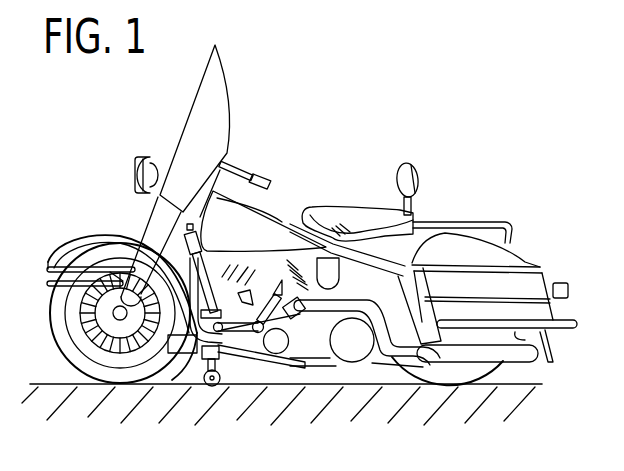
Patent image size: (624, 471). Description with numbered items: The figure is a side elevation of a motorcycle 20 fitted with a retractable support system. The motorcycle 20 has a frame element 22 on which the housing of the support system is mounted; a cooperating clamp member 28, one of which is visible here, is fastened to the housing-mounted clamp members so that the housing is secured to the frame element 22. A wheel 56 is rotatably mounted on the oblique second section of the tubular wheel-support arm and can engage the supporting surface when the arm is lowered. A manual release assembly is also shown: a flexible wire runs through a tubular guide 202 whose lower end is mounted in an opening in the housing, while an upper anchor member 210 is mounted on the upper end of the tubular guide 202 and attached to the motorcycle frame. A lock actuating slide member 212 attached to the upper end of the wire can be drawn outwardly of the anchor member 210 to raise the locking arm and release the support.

The motorcycle 20 is at (348, 188).
The frame element 22 is at (207, 285).
The cooperating clamp member 28 is at (183, 347).
The wheel 56 is at (214, 388).
The tubular guide 202 is at (158, 232).
The upper anchor member 210 is at (202, 236).
The lock actuating slide member 212 is at (221, 164).